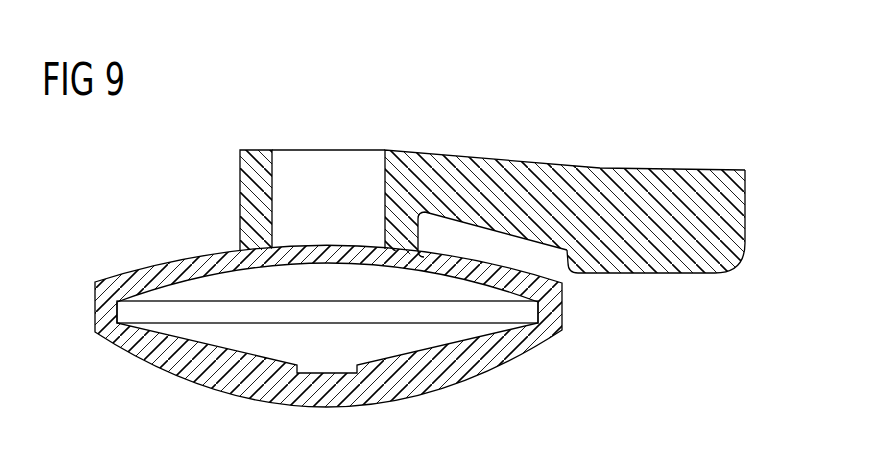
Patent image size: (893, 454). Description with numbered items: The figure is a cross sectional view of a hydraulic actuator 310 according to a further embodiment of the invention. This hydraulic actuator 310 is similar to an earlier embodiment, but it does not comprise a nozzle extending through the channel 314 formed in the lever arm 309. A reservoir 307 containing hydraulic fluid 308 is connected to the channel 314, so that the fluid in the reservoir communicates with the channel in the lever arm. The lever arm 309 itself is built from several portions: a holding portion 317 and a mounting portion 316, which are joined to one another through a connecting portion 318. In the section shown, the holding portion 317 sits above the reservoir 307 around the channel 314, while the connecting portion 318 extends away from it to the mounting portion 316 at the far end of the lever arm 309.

The hydraulic actuator 310 is at (122, 154).
The reservoir 307 is at (420, 373).
The hydraulic fluid 308 is at (482, 312).
The lever arm 309 is at (620, 158).
The channel 314 is at (327, 160).
The mounting portion 316 is at (733, 220).
The holding portion 317 is at (250, 176).
The connecting portion 318 is at (495, 165).